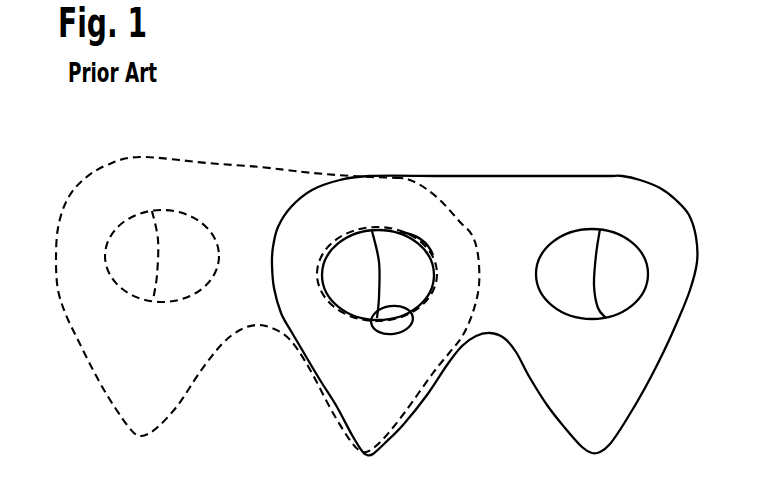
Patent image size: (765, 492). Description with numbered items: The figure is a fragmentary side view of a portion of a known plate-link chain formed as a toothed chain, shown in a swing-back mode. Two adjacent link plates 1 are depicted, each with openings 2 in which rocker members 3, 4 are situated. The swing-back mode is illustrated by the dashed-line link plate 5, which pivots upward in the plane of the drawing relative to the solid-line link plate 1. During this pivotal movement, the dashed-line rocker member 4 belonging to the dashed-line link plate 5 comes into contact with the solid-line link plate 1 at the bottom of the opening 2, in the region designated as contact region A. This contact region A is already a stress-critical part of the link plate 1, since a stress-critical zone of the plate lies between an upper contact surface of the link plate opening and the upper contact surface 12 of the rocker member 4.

The link plate 1 is at (668, 194).
The opening 2 is at (373, 231).
The rocker member 3 is at (353, 263).
The rocker member 4 is at (398, 263).
The link plate 5 is at (150, 158).
The upper contact surface 12 is at (425, 238).
The contact region A is at (405, 331).